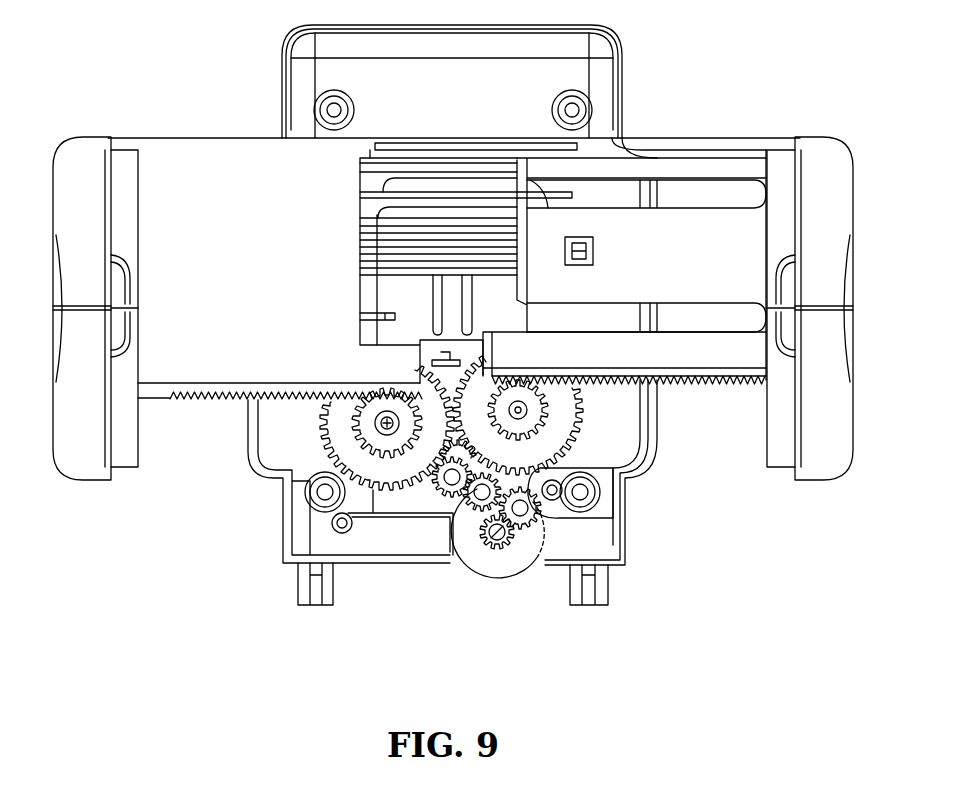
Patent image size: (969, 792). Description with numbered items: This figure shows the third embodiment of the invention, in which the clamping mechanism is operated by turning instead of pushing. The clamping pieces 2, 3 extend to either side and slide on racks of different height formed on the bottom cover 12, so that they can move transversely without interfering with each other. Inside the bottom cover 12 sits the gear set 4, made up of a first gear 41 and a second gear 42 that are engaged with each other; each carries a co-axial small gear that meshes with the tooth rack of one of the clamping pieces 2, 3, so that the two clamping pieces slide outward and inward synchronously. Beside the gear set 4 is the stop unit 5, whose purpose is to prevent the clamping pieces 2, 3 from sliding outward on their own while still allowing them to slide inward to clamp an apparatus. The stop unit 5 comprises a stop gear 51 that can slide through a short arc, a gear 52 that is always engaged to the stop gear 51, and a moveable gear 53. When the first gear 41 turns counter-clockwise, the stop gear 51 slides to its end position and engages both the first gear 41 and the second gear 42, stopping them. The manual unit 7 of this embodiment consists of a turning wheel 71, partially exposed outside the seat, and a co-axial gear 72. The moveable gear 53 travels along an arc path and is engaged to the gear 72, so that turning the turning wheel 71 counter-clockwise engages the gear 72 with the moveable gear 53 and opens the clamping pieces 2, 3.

The clamping piece 2 is at (210, 150).
The bottom cover 12 is at (540, 77).
The clamping piece 3 is at (682, 168).
The gear set 4 is at (425, 461).
The first gear 41 is at (345, 433).
The second gear 42 is at (480, 428).
The stop unit 5 is at (580, 479).
The stop gear 51 is at (468, 460).
The gear 52 is at (493, 478).
The moveable gear 53 is at (535, 515).
The manual unit 7 is at (493, 588).
The turning wheel 71 is at (472, 546).
The gear 72 is at (510, 546).